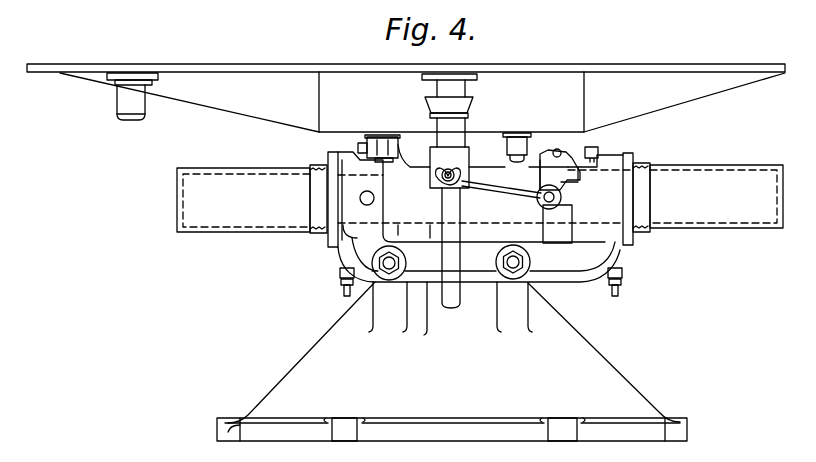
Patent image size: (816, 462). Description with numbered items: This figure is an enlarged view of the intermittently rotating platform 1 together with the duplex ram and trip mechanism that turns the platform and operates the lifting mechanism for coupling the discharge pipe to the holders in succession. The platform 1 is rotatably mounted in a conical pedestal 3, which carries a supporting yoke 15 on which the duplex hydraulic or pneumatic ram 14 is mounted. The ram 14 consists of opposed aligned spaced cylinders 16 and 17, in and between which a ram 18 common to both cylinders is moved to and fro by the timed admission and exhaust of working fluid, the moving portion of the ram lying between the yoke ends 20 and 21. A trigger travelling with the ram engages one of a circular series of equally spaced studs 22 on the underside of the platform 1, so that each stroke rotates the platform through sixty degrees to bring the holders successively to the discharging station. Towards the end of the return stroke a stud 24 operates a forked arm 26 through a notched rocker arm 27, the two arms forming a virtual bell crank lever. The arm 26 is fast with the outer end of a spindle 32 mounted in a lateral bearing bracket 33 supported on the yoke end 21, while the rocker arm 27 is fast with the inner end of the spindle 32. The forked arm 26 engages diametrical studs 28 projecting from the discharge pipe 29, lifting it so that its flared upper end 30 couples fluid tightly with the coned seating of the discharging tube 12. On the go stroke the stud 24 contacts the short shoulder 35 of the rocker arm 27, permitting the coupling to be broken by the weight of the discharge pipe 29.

The platform 1 is at (406, 98).
The conical pedestal 3 is at (452, 361).
The discharging tube 12 is at (132, 100).
The duplex hydraulic or pneumatic ram 14 is at (423, 319).
The supporting yoke 15 is at (592, 273).
The cylinder 16 is at (398, 199).
The cylinder 17 is at (675, 197).
The ram 18 is at (480, 193).
The yoke end 20 is at (330, 157).
The yoke end 21 is at (633, 153).
The stud 22 is at (390, 140).
The stud 24 is at (557, 150).
The forked arm 26 is at (484, 189).
The notched rocker arm 27 is at (569, 150).
The diametrical studs 28 is at (439, 187).
The discharge pipe 29 is at (455, 292).
The flared upper end 30 is at (470, 102).
The spindle 32 is at (565, 188).
The lateral bearing bracket 33 is at (560, 202).
The short shoulder 35 is at (543, 160).